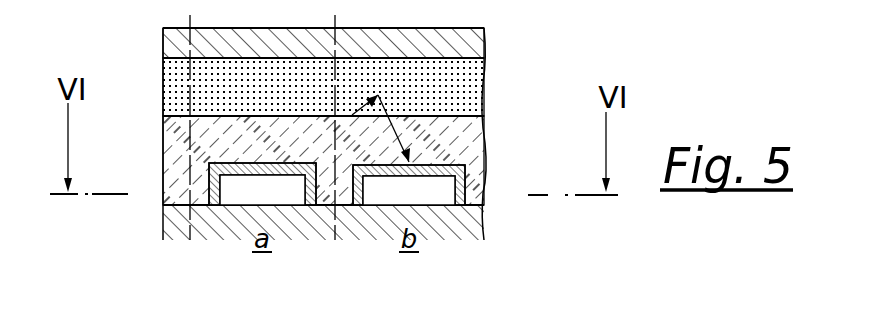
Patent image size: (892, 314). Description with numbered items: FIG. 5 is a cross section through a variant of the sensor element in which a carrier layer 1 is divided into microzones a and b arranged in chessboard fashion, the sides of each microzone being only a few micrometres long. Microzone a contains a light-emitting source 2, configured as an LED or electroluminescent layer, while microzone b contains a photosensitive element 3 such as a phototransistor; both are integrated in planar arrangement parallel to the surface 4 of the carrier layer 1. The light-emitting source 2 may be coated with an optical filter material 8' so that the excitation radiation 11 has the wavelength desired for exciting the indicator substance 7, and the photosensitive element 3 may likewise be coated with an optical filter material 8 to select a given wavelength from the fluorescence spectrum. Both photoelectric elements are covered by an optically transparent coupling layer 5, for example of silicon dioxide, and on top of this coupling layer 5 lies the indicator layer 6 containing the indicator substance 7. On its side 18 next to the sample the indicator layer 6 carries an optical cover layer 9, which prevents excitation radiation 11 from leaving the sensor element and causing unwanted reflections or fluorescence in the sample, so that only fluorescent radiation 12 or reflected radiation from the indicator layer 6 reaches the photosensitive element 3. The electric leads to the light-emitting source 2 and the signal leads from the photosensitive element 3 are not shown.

The carrier layer 1 is at (432, 215).
The light-emitting sources 2 is at (237, 178).
The photosensitive elements 3 is at (472, 226).
The surface of the carrier layer 4 is at (220, 172).
The coupling layer 5 is at (466, 133).
The indicator layer 6 is at (483, 84).
The indicator substance 7 is at (483, 107).
The optical filter material 8 is at (458, 204).
The optical filter material 8' is at (212, 178).
The optical cover layer 9 is at (481, 41).
The excitation radiation 11 is at (322, 150).
The fluorescent radiation 12 is at (397, 132).
The side next to the sample 18 is at (208, 56).